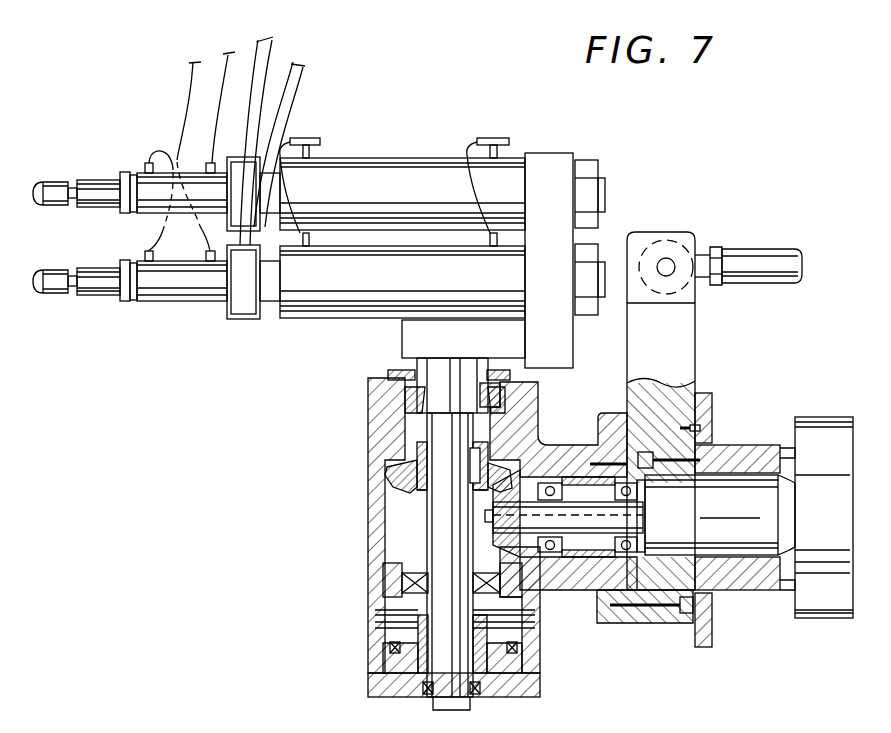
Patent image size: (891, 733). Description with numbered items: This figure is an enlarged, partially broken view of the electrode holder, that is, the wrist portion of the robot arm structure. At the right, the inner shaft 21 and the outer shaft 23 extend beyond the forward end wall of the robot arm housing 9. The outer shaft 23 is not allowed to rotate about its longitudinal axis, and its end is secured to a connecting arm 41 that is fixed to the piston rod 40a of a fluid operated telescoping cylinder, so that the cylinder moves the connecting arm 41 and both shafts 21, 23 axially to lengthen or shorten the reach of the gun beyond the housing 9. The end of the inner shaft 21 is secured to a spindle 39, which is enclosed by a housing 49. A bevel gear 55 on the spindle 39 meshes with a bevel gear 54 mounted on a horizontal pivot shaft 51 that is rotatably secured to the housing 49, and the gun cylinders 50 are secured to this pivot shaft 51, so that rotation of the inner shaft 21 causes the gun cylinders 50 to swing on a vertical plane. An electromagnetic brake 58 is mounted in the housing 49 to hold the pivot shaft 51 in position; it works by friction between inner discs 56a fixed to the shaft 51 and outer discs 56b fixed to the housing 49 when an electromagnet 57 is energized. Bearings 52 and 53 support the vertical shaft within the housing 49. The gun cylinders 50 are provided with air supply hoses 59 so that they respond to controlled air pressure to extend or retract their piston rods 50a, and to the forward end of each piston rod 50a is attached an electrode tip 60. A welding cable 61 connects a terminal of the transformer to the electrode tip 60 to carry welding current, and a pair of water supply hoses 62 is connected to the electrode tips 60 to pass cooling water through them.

The robot arm housing 9 is at (830, 418).
The inner shaft 21 is at (742, 548).
The outer shaft 23 is at (762, 455).
The spindle 39 is at (630, 516).
The piston rod 40a is at (757, 256).
The connecting arm 41 is at (686, 357).
The housing 49 is at (536, 677).
The gun cylinder 50 is at (385, 160).
The piston rod 50a is at (268, 160).
The pivot shaft 51 is at (437, 510).
The bearing 52 is at (422, 690).
The bearing 53 is at (405, 400).
The bevel gear 54 is at (388, 477).
The bevel gear 55 is at (528, 556).
The inner discs 56a is at (390, 645).
The outer discs 56b is at (375, 614).
The electromagnet 57 is at (384, 666).
The electromagnetic brake 58 is at (275, 605).
The air supply hose 59 is at (345, 132).
The electrode tip 60 is at (56, 182).
The cable 61 is at (300, 56).
The water supply hoses 62 is at (223, 56).